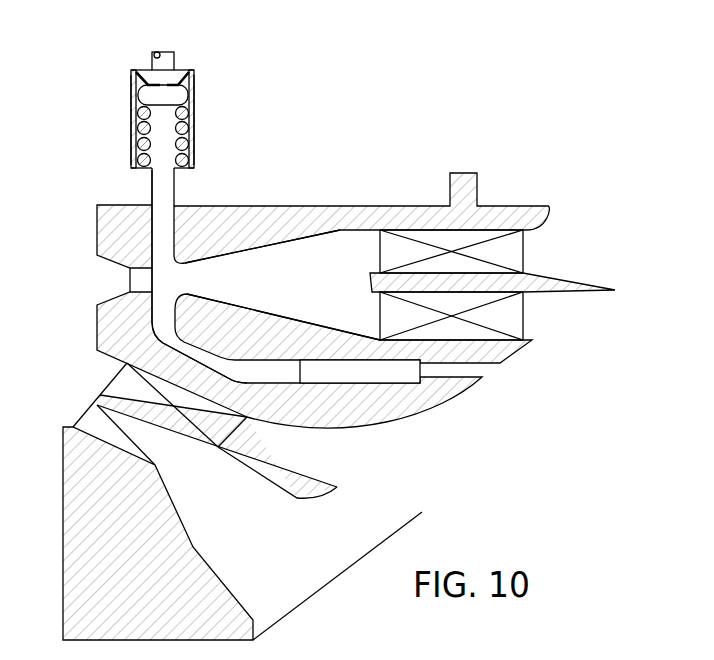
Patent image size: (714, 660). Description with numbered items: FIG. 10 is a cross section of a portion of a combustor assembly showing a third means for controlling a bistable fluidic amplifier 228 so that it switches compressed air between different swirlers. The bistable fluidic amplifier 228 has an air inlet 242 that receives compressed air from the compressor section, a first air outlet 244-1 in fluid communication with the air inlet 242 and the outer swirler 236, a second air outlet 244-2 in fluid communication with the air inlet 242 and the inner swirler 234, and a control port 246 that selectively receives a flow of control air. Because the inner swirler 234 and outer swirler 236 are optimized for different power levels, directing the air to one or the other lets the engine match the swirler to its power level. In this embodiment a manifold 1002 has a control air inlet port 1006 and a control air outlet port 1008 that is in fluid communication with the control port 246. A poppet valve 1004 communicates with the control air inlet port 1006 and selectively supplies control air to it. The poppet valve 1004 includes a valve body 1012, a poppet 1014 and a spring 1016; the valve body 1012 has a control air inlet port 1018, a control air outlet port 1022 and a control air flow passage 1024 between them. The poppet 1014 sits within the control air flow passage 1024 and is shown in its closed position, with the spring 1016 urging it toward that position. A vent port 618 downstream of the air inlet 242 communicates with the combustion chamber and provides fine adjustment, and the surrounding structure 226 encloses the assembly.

The poppet valve 1004 is at (209, 73).
The control air inlet port 1018 is at (166, 56).
The poppet 1014 is at (147, 93).
The valve body 1012 is at (133, 112).
The spring 1016 is at (186, 114).
The control air outlet port 1022 is at (161, 164).
The control air flow passage 1024 is at (171, 143).
The manifold 1002 is at (188, 184).
The control air inlet port 1006 is at (155, 177).
The control air outlet port 1008 is at (188, 208).
The air inlet 242 is at (103, 280).
The bistable fluidic amplifier 228 is at (324, 241).
The fuel nozzle assembly 226 is at (516, 194).
The outer swirler 236 is at (525, 249).
The inner swirler 234 is at (525, 311).
The first air outlet 244-1 is at (380, 250).
The second air outlet 244-2 is at (380, 312).
The control port 246 is at (165, 262).
The vent port 618 is at (482, 376).